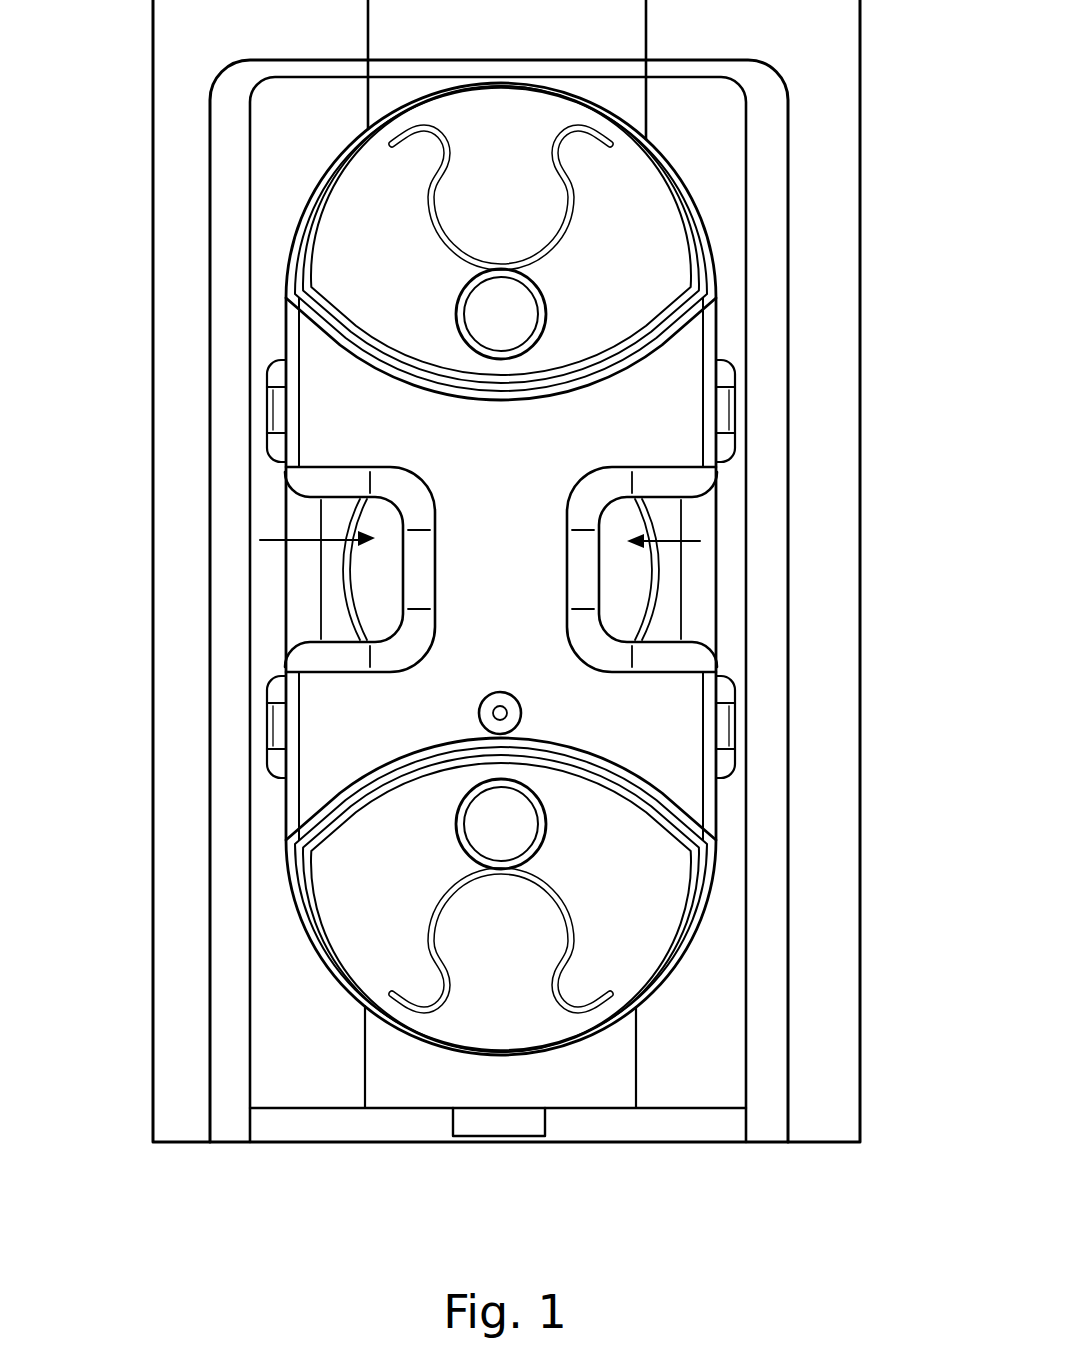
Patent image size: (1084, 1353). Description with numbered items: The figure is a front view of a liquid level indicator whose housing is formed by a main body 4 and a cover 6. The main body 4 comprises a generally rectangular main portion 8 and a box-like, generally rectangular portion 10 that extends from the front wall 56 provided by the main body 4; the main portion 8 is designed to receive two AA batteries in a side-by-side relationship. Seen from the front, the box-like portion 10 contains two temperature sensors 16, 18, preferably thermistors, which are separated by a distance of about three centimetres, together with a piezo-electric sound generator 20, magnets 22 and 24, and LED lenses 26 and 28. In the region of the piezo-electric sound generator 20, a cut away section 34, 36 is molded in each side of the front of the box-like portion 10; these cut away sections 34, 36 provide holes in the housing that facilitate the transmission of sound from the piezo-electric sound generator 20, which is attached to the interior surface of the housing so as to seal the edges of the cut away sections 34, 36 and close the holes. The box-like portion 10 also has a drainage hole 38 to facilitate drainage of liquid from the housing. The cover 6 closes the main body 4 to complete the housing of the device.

The main body 4 is at (307, 1093).
The cover 6 is at (845, 1090).
The main portion 8 is at (713, 110).
The box-like portion 10 is at (650, 442).
The temperature sensor 16 is at (507, 823).
The temperature sensor 18 is at (503, 313).
The piezo-electric sound generator 20 is at (303, 605).
The magnet 22 is at (485, 930).
The magnet 24 is at (480, 223).
The LED lens 26 is at (282, 447).
The LED lens 28 is at (722, 373).
The cut away section 34 is at (260, 540).
The cut away section 36 is at (700, 541).
The drainage hole 38 is at (498, 713).
The front wall 56 is at (700, 1035).